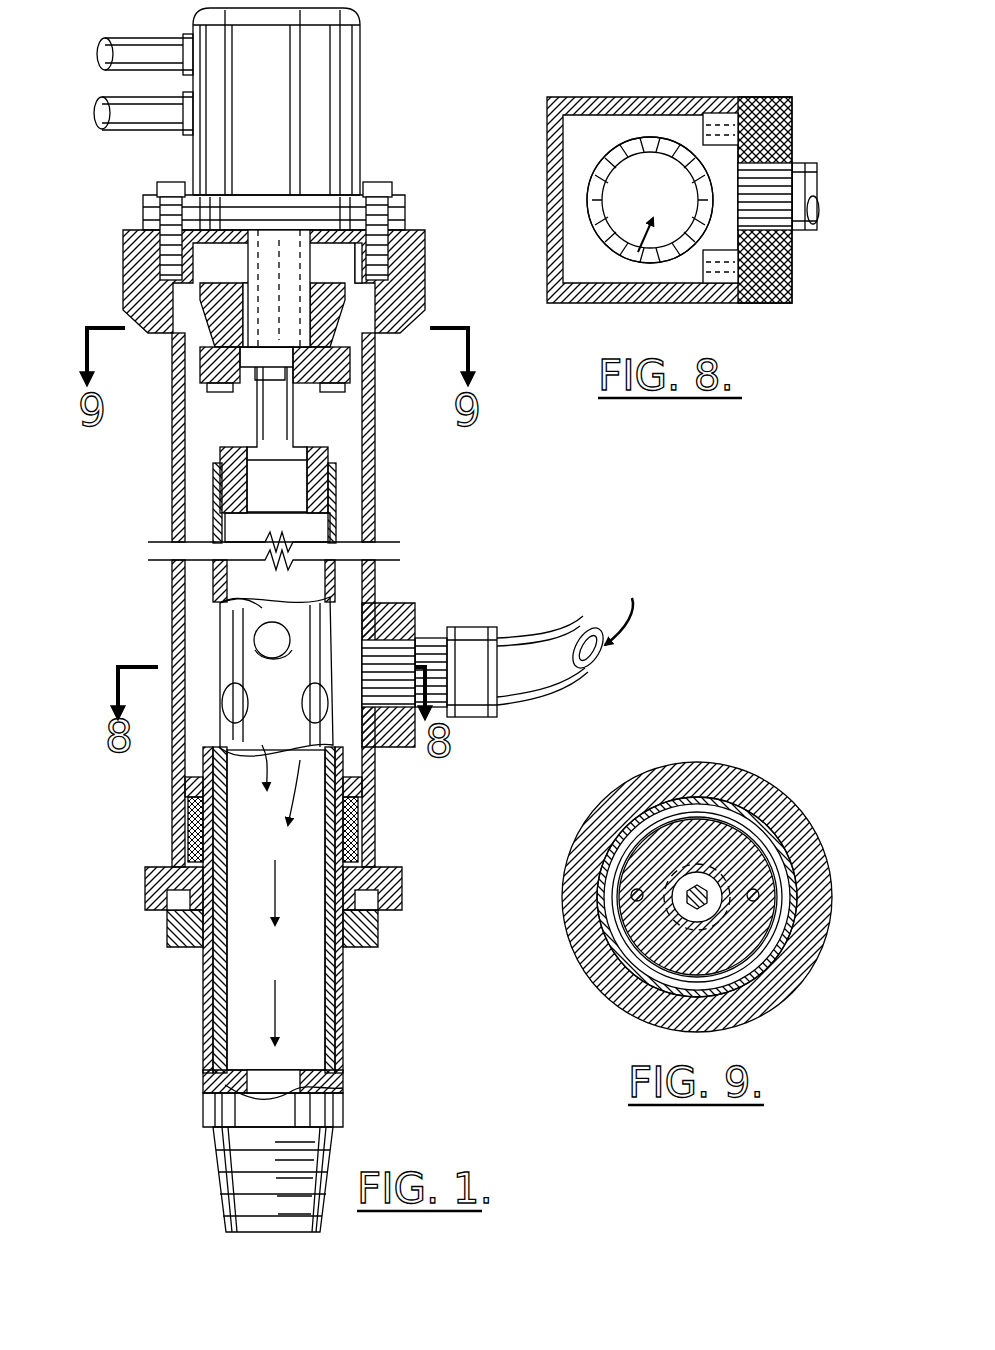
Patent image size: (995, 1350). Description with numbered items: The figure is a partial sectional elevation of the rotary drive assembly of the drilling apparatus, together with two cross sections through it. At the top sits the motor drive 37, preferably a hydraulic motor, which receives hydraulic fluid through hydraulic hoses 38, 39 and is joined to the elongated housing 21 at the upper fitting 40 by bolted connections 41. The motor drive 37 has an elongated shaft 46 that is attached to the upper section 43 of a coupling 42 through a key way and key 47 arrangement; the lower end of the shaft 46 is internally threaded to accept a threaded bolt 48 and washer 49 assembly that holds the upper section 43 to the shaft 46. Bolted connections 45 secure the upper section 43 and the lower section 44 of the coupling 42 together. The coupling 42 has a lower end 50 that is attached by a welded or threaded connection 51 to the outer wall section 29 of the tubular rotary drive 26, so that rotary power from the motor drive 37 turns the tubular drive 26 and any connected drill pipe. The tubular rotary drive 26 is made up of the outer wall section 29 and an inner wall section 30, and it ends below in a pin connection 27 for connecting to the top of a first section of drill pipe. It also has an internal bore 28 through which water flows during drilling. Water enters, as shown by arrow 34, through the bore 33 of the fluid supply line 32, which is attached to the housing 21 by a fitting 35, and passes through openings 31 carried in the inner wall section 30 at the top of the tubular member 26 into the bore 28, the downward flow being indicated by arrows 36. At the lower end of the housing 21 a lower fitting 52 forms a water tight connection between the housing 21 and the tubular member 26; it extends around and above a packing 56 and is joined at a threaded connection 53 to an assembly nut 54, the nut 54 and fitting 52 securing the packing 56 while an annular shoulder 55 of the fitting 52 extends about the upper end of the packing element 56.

In FIG. 1, the elongated housing 21 is at (174, 447).
In FIG. 8, the elongated housing 21 is at (615, 97).
In FIG. 9, the elongated housing 21 is at (800, 886).
In FIG. 1, the tubular rotary drive 26 is at (203, 1108).
In FIG. 1, the pin connection 27 is at (216, 1200).
In FIG. 1, the internal bore 28 is at (300, 1050).
In FIG. 8, the internal bore 28 is at (637, 258).
In FIG. 1, the outer wall section 29 is at (203, 1047).
In FIG. 1, the inner wall section 30 is at (237, 628).
In FIG. 8, the inner wall section 30 is at (590, 170).
In FIG. 1, the openings 31 is at (268, 612).
In FIG. 1, the fluid supply line 32 is at (536, 688).
In FIG. 8, the fluid supply line 32 is at (808, 163).
In FIG. 1, the bore 33 is at (599, 664).
In FIG. 8, the bore 33 is at (830, 203).
In FIG. 1, the arrow 34 is at (630, 596).
In FIG. 1, the fitting 35 is at (405, 603).
In FIG. 8, the fitting 35 is at (780, 97).
In FIG. 1, the arrows 36 is at (222, 711).
In FIG. 1, the motor drive 37 is at (276, 122).
In FIG. 1, the hydraulic hose 38 is at (105, 52).
In FIG. 1, the hydraulic hose 39 is at (102, 116).
In FIG. 1, the upper fitting 40 is at (123, 257).
In FIG. 9, the upper fitting 40 is at (805, 842).
In FIG. 1, the bolted connections 41 is at (160, 186).
In FIG. 1, the coupling 42 is at (200, 361).
In FIG. 1, the upper section 43 is at (362, 268).
In FIG. 9, the upper section 43 is at (752, 942).
In FIG. 1, the lower section 44 is at (350, 356).
In FIG. 1, the bolted connections 45 is at (345, 388).
In FIG. 9, the bolted connections 45 is at (759, 899).
In FIG. 1, the elongated shaft 46 is at (270, 260).
In FIG. 9, the elongated shaft 46 is at (703, 885).
In FIG. 1, the key way and key 47 is at (200, 287).
In FIG. 9, the key way and key 47 is at (655, 855).
In FIG. 1, the threaded bolt 48 is at (300, 406).
In FIG. 1, the washer 49 is at (207, 388).
In FIG. 1, the lower end 50 is at (215, 482).
In FIG. 1, the welded or threaded connection 51 is at (336, 470).
In FIG. 1, the lower fitting 52 is at (145, 893).
In FIG. 1, the threaded connection 53 is at (378, 928).
In FIG. 1, the assembly nut 54 is at (348, 947).
In FIG. 1, the annular shoulder 55 is at (185, 787).
In FIG. 1, the packing 56 is at (362, 858).